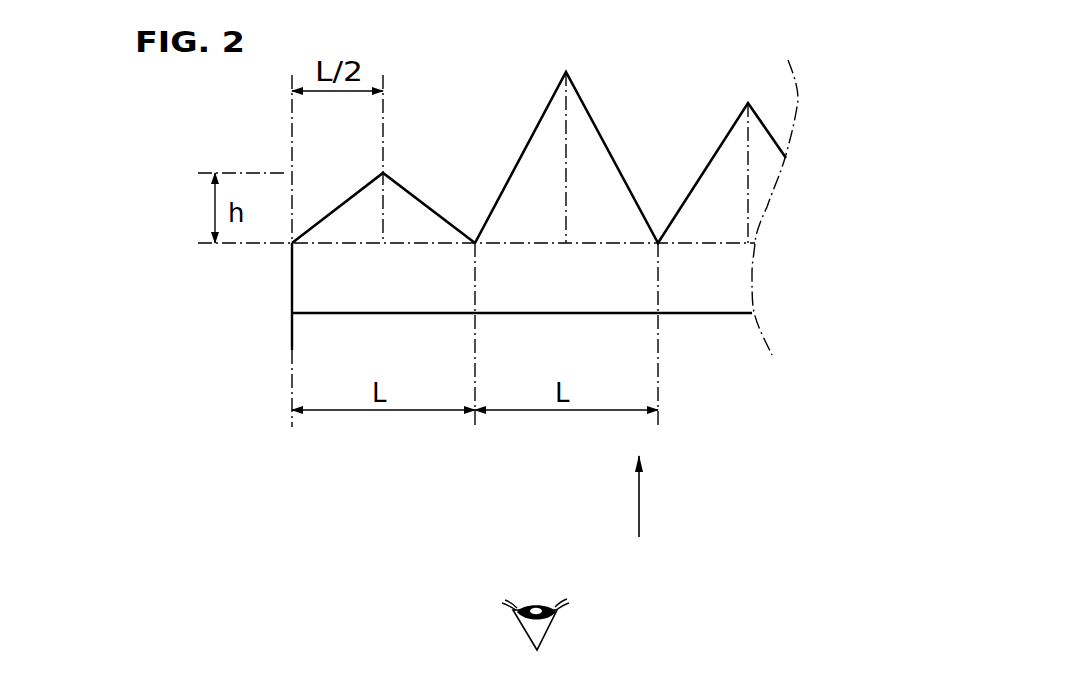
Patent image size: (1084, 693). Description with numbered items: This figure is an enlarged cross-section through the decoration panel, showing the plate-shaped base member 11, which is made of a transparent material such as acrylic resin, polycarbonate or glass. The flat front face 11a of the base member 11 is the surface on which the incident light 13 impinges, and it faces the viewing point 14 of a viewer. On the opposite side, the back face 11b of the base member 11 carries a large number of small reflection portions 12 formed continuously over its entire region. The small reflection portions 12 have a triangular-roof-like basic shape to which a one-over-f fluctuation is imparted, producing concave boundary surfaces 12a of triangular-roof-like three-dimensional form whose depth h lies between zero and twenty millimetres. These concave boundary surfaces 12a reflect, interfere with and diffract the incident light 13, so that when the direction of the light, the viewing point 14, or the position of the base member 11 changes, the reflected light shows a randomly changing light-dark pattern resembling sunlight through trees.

The base member 11 is at (308, 283).
The front face 11a is at (350, 313).
The back face 11b is at (335, 243).
The small reflection portions 12 is at (597, 125).
The concave boundary surfaces 12a is at (500, 198).
The incident light 13 is at (640, 500).
The viewing point 14 is at (547, 630).